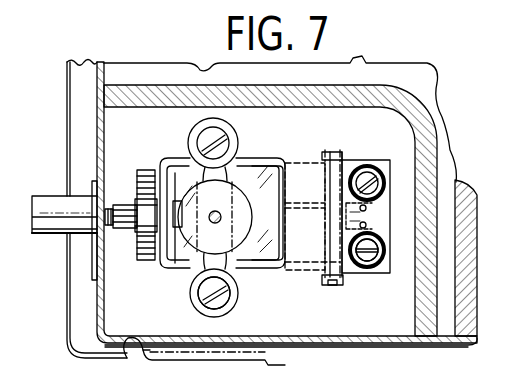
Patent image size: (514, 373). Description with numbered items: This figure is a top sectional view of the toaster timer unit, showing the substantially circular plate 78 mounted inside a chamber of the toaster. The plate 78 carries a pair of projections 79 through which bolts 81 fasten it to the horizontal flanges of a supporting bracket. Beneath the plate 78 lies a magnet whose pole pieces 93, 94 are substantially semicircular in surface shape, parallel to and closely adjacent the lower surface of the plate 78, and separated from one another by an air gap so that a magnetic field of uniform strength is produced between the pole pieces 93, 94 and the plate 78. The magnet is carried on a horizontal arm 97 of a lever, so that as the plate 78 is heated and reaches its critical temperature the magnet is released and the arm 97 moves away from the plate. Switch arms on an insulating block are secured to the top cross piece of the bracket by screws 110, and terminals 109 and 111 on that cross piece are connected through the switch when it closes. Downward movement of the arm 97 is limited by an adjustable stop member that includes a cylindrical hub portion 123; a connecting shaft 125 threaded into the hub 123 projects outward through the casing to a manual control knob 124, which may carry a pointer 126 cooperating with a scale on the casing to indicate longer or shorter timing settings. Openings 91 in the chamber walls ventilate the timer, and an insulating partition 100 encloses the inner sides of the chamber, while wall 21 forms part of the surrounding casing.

The housing wall 21 is at (100, 301).
The plate 78 is at (197, 238).
The projections 79 is at (232, 140).
The bolts 81 is at (208, 296).
The openings 91 is at (177, 353).
The pole piece 93 is at (258, 206).
The pole piece 94 is at (172, 157).
The horizontal arm 97 is at (252, 187).
The insulating partition 100 is at (378, 97).
The terminal 109 is at (373, 167).
The screws 110 is at (364, 223).
The terminal 111 is at (377, 260).
The cylindrical hub portion 123 is at (122, 200).
The manual control knob 124 is at (46, 200).
The connecting shaft 125 is at (108, 208).
The pointer 126 is at (96, 261).